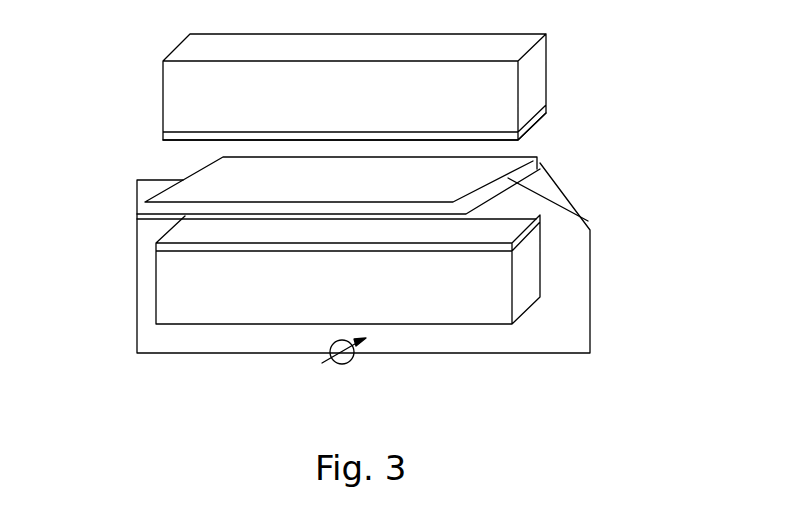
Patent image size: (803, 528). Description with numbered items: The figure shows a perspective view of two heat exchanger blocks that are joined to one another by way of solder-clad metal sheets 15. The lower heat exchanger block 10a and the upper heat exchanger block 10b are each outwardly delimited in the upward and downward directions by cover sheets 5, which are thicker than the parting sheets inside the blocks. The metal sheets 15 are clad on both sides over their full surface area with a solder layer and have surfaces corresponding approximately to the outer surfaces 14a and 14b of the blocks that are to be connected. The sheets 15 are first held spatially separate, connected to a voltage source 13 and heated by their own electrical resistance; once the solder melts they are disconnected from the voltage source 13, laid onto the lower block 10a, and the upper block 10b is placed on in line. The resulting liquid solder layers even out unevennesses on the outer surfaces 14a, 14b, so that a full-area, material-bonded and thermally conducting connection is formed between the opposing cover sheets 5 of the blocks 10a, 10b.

The lower heat exchanger block 10a is at (528, 278).
The upper heat exchanger block 10b is at (540, 80).
The outer surface 14a is at (193, 237).
The outer surface 14b is at (500, 151).
The solder-clad metal sheet 15 is at (547, 162).
The voltage source 13 is at (352, 363).
The cover sheet 5 is at (163, 141).